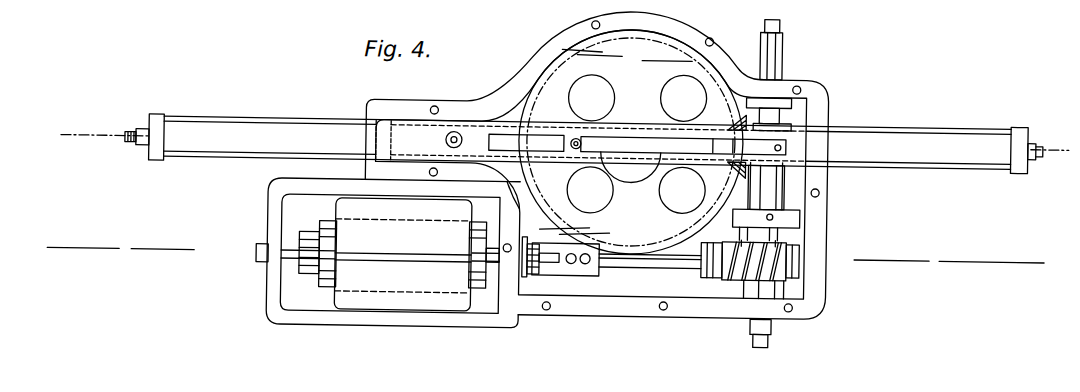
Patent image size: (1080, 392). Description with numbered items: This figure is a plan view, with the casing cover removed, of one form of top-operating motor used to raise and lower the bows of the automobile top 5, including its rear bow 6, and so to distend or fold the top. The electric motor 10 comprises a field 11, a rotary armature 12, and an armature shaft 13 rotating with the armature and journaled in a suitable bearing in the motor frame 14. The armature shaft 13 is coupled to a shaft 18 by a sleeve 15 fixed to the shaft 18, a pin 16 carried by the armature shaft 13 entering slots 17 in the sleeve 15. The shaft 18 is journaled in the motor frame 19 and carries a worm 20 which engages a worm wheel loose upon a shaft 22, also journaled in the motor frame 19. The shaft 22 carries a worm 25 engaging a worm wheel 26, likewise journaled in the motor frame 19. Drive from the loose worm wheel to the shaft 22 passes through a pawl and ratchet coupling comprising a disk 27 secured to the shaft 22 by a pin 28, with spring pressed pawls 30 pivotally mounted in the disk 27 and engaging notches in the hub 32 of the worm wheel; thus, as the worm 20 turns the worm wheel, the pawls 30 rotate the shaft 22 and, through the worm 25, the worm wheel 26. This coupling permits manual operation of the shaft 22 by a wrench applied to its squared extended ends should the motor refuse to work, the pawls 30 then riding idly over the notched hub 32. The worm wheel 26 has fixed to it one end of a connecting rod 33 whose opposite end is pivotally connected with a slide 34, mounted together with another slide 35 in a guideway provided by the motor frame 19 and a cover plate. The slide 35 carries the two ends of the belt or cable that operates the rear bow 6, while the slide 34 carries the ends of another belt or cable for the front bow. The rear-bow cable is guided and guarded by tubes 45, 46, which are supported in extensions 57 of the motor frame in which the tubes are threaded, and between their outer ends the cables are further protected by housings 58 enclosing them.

The automobile top 5 is at (544, 243).
The rear bow 6 is at (561, 137).
The electric motor 10 is at (393, 265).
The field 11 is at (412, 222).
The rotary armature 12 is at (330, 232).
The armature shaft 13 is at (258, 263).
The motor frame 14 is at (352, 329).
The sleeve 15 is at (582, 276).
The pin 16 is at (552, 264).
The slots 17 is at (541, 252).
The shaft 18 is at (690, 267).
The motor frame 19 is at (825, 294).
The worm 20 is at (748, 283).
The shaft 22 is at (782, 60).
The worm 25 is at (790, 125).
The worm wheel 26 is at (725, 143).
The disk 27 is at (805, 213).
The pin 28 is at (805, 218).
The spring pressed pawls 30 is at (760, 222).
The hub 32 is at (790, 231).
The connecting rod 33 is at (672, 155).
The slide 34 is at (601, 146).
The slide 35 is at (556, 127).
The tube 45 is at (136, 137).
The tube 46 is at (1037, 138).
The extensions 57 is at (1015, 121).
The housings 58 is at (910, 122).